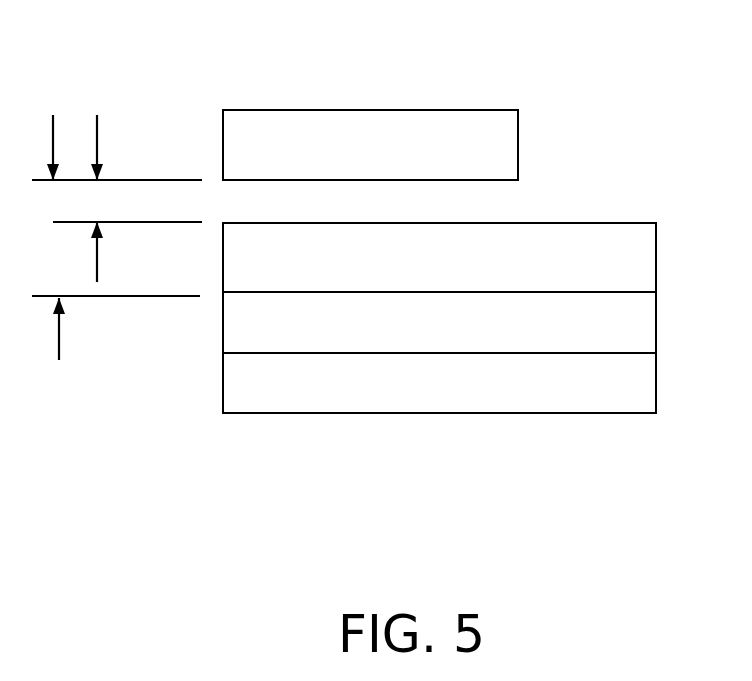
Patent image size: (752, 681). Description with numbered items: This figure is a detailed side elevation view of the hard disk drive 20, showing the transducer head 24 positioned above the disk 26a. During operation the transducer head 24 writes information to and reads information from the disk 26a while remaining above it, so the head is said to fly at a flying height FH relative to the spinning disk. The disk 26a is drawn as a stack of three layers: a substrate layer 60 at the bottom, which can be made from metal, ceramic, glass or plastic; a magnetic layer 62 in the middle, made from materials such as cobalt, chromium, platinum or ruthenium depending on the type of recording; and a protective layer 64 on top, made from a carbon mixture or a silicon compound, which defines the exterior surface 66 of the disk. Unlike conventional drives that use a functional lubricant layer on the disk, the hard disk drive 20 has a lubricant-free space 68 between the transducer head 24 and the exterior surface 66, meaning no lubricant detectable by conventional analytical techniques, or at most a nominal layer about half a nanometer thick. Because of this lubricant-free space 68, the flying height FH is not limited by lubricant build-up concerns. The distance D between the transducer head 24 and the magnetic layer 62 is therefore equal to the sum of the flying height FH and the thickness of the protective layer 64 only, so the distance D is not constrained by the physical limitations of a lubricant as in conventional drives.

The hard disk drive 20 is at (519, 74).
The transducer head 24 is at (285, 110).
The disk 26a is at (625, 221).
The substrate layer 60 is at (642, 375).
The magnetic layer 62 is at (646, 316).
The protective layer 64 is at (651, 252).
The exterior surface 66 is at (540, 223).
The lubricant-free space 68 is at (297, 197).
The flying height FH is at (95, 247).
The distance D is at (59, 330).